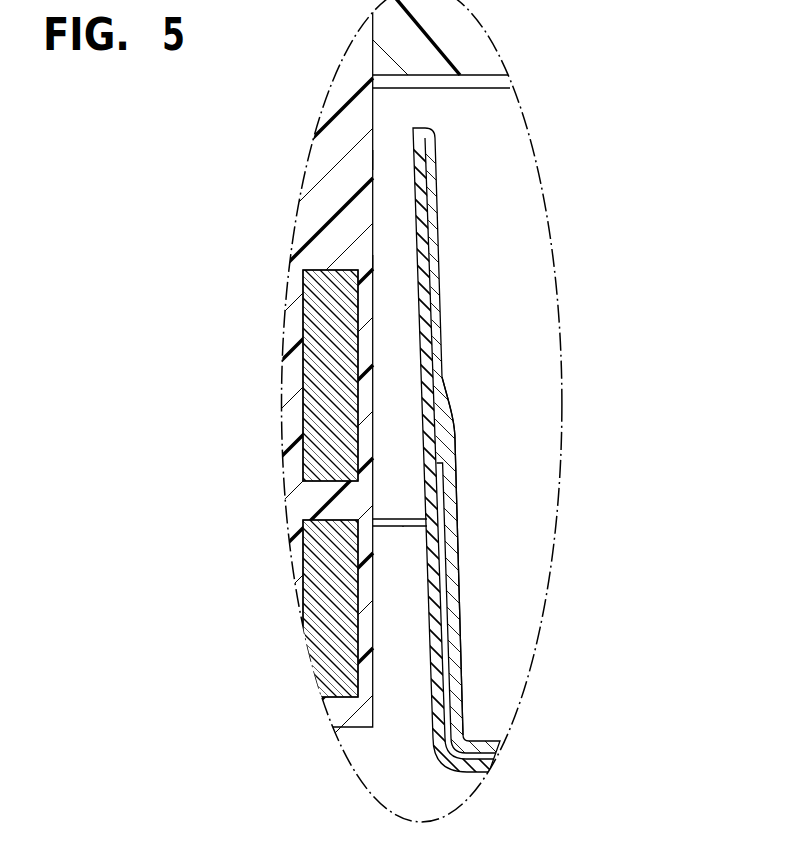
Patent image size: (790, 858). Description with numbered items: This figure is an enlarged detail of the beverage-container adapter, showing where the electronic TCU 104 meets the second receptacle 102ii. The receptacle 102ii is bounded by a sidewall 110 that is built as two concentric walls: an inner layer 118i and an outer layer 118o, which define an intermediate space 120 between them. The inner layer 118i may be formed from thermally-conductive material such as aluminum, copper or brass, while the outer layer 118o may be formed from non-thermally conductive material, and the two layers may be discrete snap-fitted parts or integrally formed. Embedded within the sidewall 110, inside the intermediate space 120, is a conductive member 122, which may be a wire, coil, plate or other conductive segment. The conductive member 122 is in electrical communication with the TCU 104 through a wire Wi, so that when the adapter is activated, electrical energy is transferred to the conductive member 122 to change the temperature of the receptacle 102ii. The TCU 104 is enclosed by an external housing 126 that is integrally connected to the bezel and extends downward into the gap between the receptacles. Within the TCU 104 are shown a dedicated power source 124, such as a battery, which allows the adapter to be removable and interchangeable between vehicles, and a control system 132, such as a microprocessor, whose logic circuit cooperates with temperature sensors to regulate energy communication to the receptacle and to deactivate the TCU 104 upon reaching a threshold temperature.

The electronic TCU 104 is at (386, 112).
The second receptacle 102ii is at (471, 157).
The sidewall 110 is at (450, 228).
The external housing 126 is at (373, 262).
The inner layer 118i is at (437, 273).
The outer layer 118o is at (440, 322).
The intermediate space 120 is at (440, 437).
The conductive member 122 is at (440, 512).
The wire Wi is at (403, 526).
The dedicated power source 124 is at (292, 464).
The control system 132 is at (292, 567).